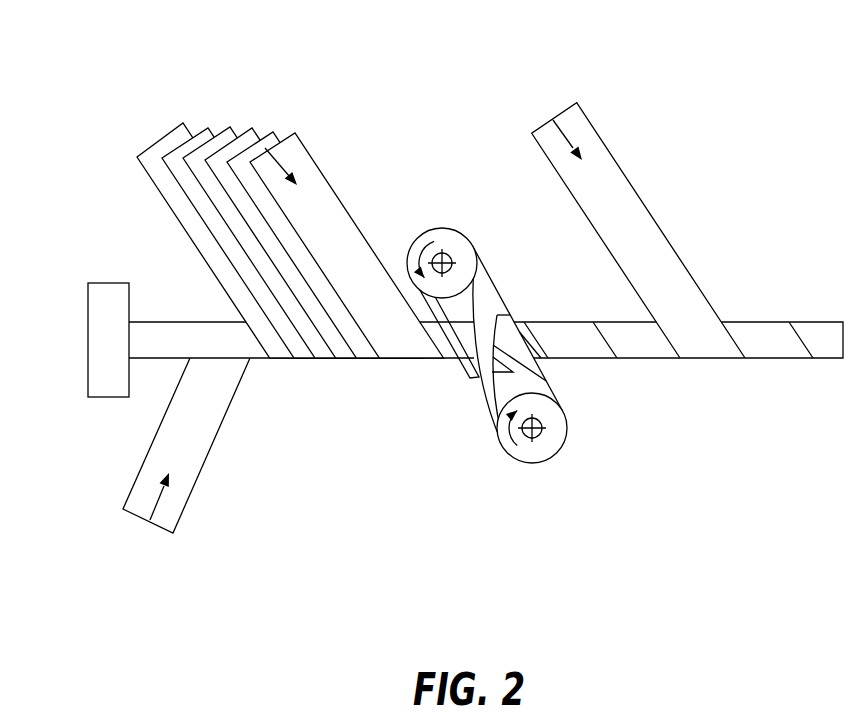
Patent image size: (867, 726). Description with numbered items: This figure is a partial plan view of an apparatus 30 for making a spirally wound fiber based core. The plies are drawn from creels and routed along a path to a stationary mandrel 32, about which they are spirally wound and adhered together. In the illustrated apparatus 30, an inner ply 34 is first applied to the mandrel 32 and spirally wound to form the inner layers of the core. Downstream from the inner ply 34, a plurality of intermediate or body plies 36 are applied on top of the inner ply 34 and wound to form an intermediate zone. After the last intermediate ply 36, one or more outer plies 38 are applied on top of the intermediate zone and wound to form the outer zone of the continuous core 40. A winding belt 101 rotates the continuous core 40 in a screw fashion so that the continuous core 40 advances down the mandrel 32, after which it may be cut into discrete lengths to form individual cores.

The apparatus 30 is at (115, 58).
The mandrel 32 is at (166, 322).
The inner ply 34 is at (160, 532).
The intermediate or body plies 36 is at (310, 125).
The outer ply 38 is at (537, 132).
The continuous core 40 is at (777, 327).
The winding belt 101 is at (490, 282).